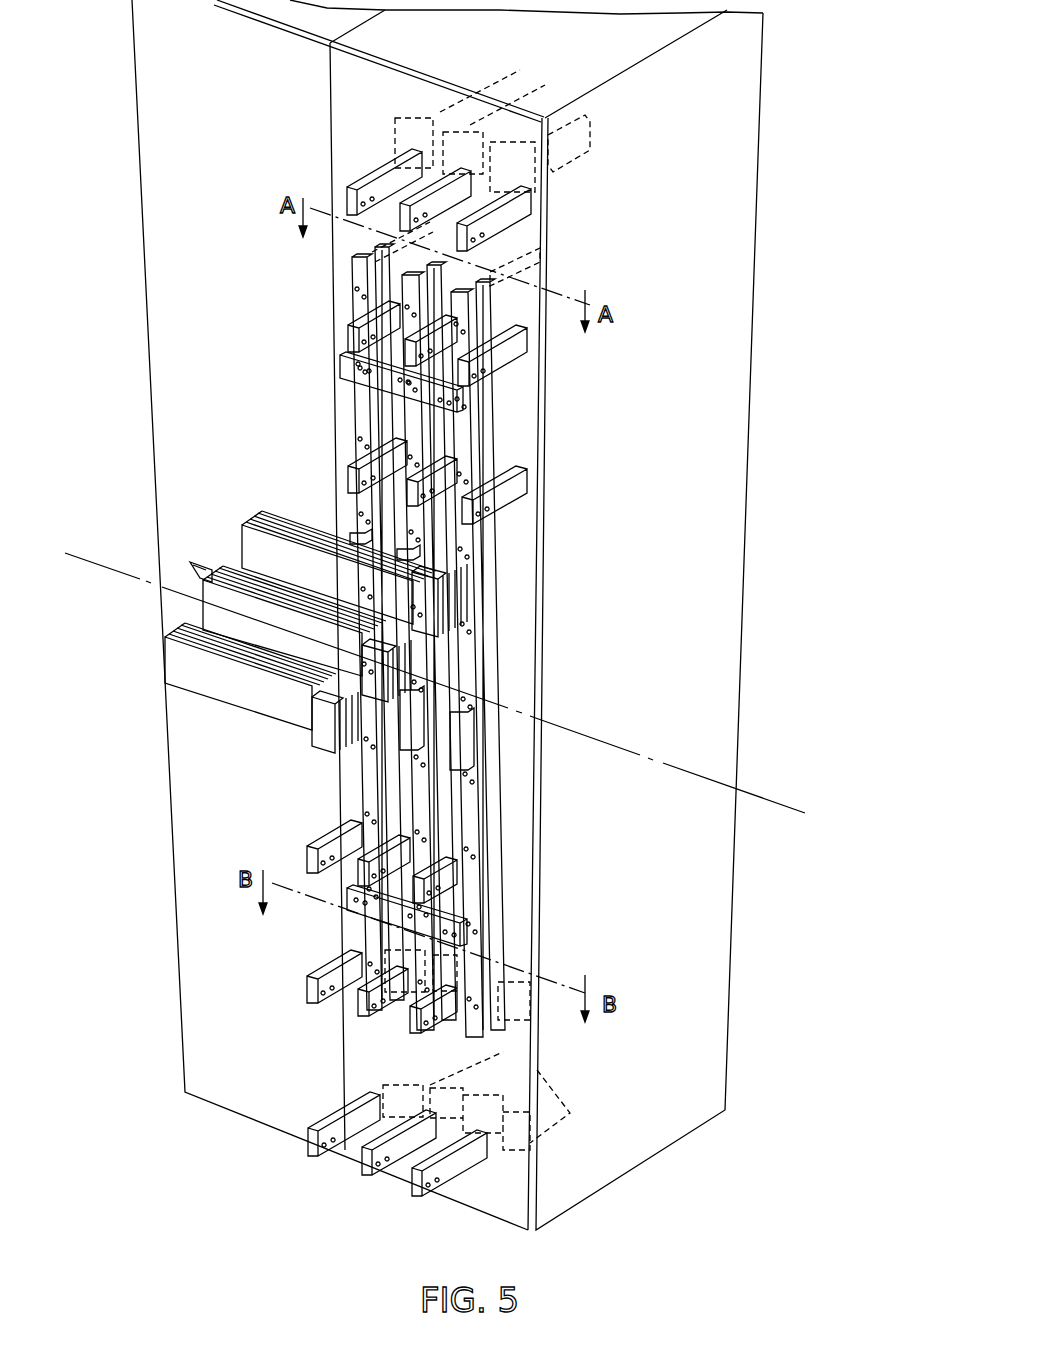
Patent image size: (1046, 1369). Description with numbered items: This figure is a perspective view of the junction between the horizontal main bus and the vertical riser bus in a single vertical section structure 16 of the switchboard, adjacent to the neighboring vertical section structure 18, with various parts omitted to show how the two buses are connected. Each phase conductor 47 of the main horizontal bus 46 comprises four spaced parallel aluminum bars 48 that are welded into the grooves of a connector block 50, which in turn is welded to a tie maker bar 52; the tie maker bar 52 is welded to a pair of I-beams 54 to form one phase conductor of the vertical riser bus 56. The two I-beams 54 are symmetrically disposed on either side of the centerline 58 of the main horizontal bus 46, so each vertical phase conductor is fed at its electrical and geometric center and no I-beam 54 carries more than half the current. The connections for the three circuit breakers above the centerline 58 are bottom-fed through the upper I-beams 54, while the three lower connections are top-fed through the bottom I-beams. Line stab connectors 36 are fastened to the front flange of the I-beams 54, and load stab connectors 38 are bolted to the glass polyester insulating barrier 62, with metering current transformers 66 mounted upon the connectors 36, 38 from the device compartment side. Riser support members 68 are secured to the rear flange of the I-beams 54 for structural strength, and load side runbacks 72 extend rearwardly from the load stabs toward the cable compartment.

The vertical section structure 16 is at (680, 30).
The vertical section structure 18 is at (292, 18).
The line stab connector 36 is at (530, 275).
The load stab connector 38 is at (585, 150).
The main horizontal bus 46 is at (238, 514).
The phase conductor 47 is at (242, 546).
The aluminum bar 48 is at (203, 575).
The connector block 50 is at (325, 742).
The tie maker bar 52 is at (405, 548).
The I-beam 54 is at (494, 546).
The vertical riser bus 56 is at (399, 1055).
The centerline 58 is at (774, 802).
The insulating barrier 62 is at (424, 76).
The metering current transformer 66 is at (568, 172).
The riser support member 68 is at (345, 362).
The load side runback 72 is at (383, 170).